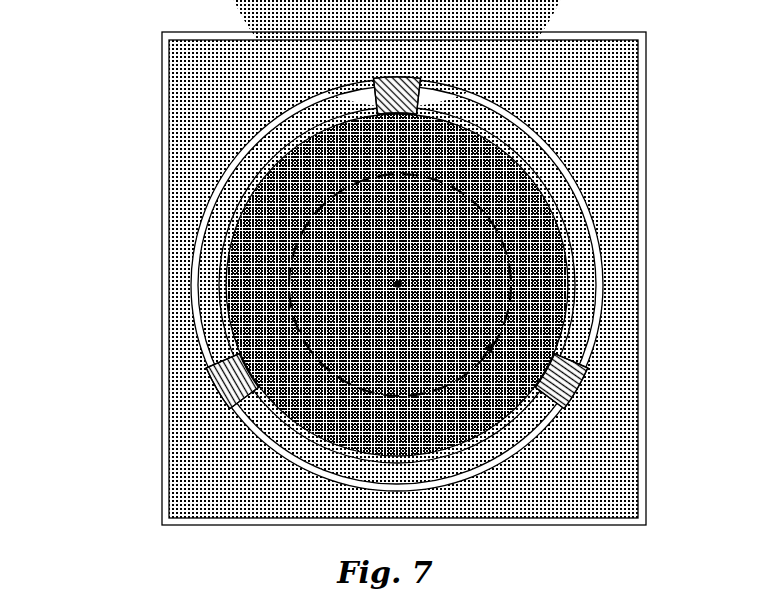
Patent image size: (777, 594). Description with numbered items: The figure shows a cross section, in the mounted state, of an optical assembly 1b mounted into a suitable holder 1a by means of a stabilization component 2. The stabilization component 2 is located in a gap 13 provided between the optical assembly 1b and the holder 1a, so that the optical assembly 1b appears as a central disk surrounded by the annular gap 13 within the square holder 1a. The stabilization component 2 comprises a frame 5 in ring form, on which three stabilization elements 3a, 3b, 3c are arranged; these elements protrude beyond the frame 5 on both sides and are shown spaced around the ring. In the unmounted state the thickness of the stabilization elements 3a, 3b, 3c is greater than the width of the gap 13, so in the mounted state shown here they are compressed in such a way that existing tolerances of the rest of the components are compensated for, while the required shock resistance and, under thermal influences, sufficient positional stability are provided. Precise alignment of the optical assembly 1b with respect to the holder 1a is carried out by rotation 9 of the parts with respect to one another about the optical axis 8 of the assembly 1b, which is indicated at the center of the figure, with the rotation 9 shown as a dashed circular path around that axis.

The holder 1a is at (331, 279).
The optical assembly 1b is at (301, 285).
The stabilization component 2 is at (268, 82).
The stabilization element 3a is at (449, 60).
The stabilization element 3b is at (637, 389).
The stabilization element 3c is at (141, 432).
The frame 5 is at (323, 270).
The optical axis 8 is at (560, 200).
The rotation 9 is at (506, 338).
The gap 13 is at (310, 242).